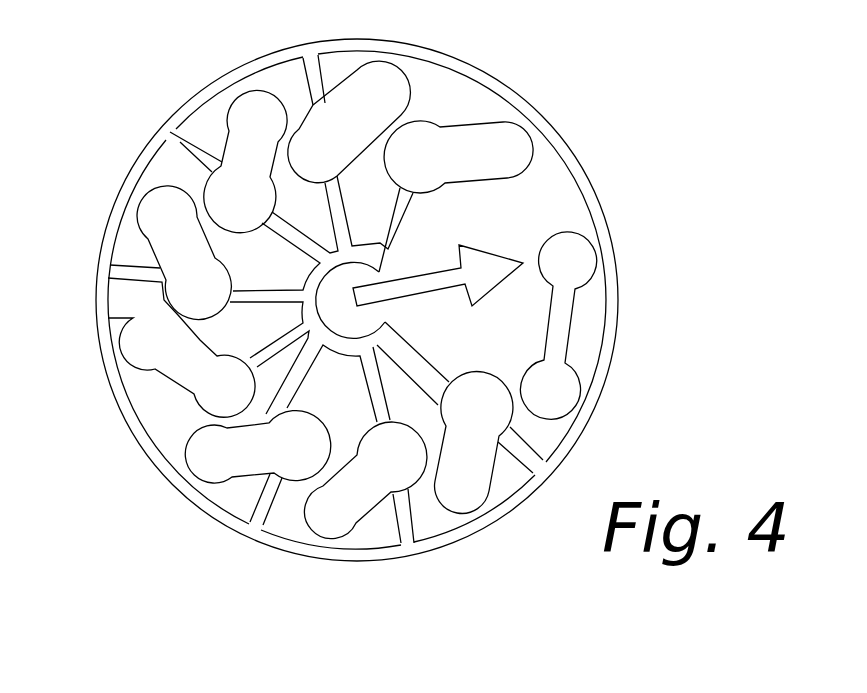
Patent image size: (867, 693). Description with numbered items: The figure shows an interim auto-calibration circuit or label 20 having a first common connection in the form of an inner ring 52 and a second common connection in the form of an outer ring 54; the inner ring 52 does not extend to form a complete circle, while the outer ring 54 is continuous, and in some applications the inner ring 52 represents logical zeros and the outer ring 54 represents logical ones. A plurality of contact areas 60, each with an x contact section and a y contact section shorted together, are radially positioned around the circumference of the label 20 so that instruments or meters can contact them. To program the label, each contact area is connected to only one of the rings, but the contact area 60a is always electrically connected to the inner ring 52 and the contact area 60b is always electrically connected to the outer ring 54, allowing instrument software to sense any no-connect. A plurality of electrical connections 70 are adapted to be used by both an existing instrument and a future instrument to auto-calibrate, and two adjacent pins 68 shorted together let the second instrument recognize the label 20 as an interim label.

The interim auto-calibration circuit or label 20 is at (593, 35).
The inner ring 52 is at (318, 341).
The outer ring 54 is at (506, 522).
The contact areas 60 is at (372, 545).
The contact area 60a is at (525, 140).
The contact area 60b is at (235, 480).
The two adjacent pins 68 is at (578, 262).
The electrical connections 70 is at (140, 295).